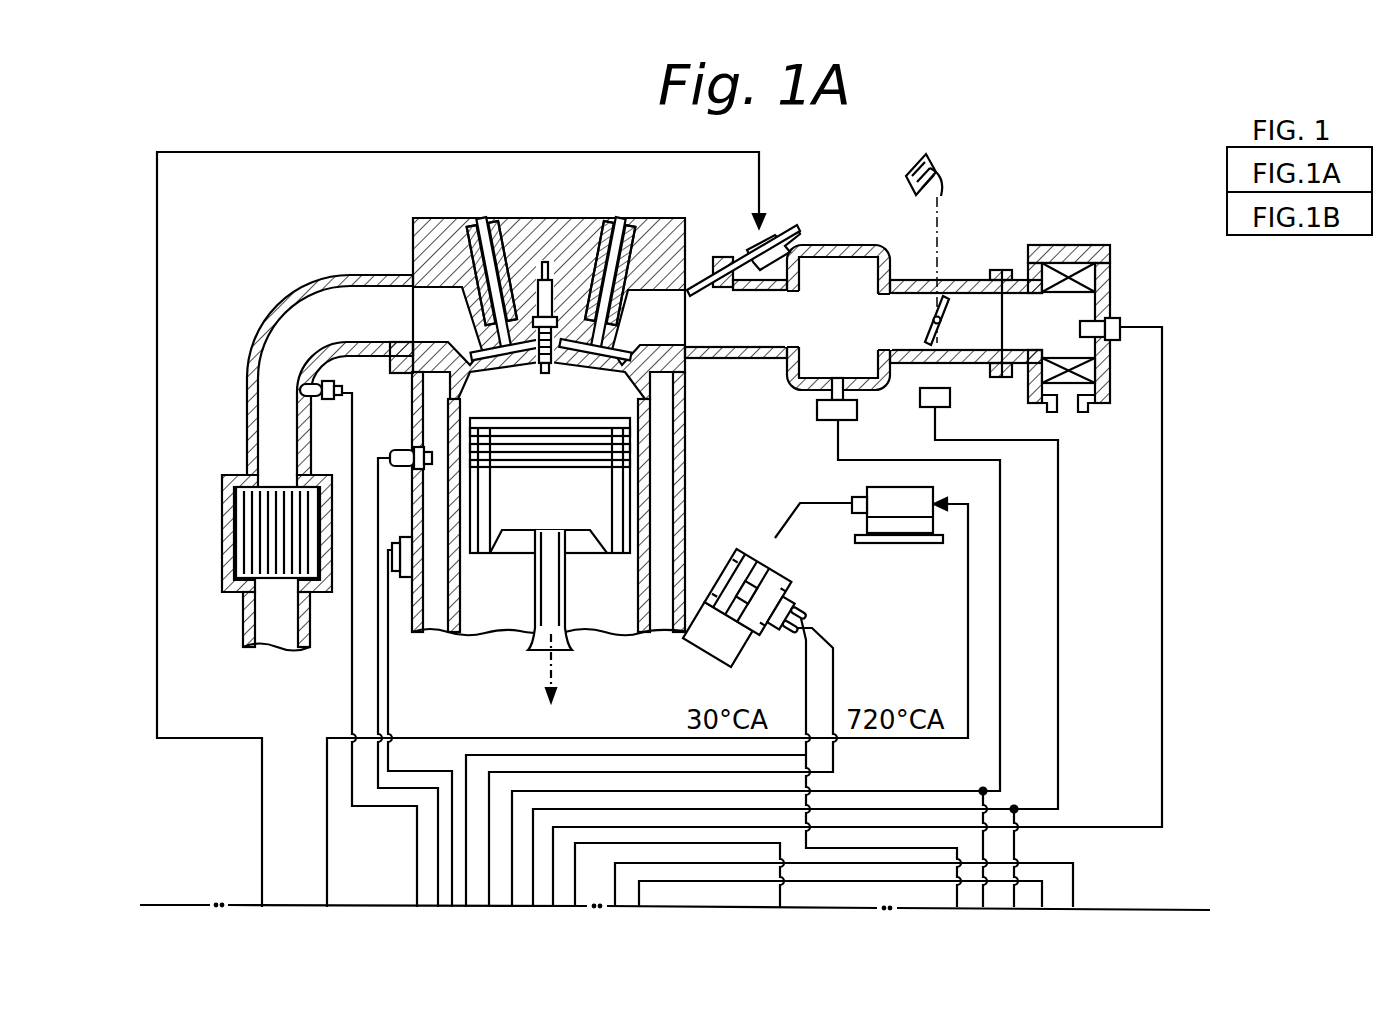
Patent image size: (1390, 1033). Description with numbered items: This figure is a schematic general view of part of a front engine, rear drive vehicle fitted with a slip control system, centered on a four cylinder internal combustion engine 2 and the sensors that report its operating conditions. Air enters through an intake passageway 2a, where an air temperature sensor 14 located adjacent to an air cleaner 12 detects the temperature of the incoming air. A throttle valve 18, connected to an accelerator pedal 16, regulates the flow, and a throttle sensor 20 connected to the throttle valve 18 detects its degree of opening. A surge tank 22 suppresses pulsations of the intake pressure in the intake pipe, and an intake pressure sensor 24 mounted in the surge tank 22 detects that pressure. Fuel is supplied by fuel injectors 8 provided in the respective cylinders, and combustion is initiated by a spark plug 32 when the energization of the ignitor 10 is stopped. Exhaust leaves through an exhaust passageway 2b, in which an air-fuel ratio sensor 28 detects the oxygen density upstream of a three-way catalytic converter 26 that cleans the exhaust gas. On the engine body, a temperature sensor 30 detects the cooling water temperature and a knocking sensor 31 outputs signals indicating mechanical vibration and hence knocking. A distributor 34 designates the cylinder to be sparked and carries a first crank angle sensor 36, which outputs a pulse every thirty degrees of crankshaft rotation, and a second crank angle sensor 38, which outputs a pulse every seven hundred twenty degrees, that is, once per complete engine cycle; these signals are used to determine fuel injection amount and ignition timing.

The internal combustion engine 2 is at (600, 210).
The intake passageway 2a is at (984, 226).
The exhaust passageway 2b is at (283, 318).
The fuel injector 8 is at (741, 256).
The ignitor 10 is at (905, 545).
The air cleaner 12 is at (1082, 263).
The air temperature sensor 14 is at (1122, 313).
The accelerator pedal 16 is at (931, 162).
The throttle valve 18 is at (930, 318).
The throttle sensor 20 is at (950, 404).
The surge tank 22 is at (842, 245).
The intake pressure sensor 24 is at (857, 413).
The three-way catalytic converter 26 is at (226, 597).
The air-fuel ratio sensor 28 is at (352, 377).
The temperature sensor 30 is at (398, 452).
The knocking sensor 31 is at (403, 578).
The spark plug 32 is at (545, 262).
The distributor 34 is at (750, 550).
The first crank angle sensor 36 is at (773, 638).
The second crank angle sensor 38 is at (787, 609).